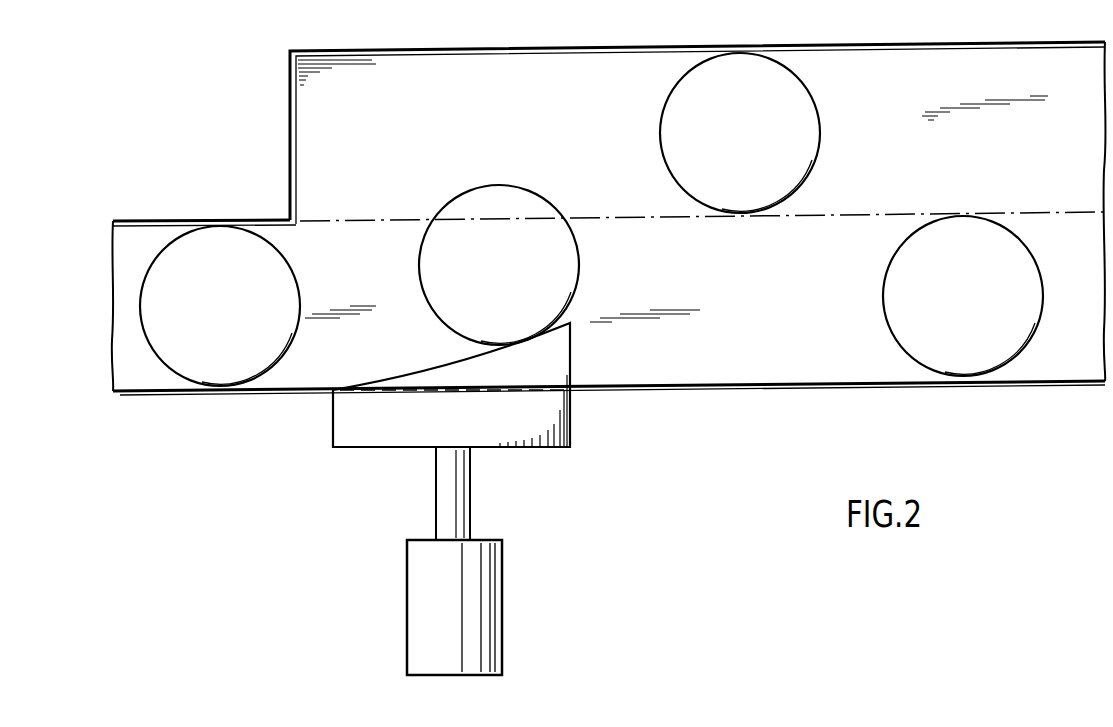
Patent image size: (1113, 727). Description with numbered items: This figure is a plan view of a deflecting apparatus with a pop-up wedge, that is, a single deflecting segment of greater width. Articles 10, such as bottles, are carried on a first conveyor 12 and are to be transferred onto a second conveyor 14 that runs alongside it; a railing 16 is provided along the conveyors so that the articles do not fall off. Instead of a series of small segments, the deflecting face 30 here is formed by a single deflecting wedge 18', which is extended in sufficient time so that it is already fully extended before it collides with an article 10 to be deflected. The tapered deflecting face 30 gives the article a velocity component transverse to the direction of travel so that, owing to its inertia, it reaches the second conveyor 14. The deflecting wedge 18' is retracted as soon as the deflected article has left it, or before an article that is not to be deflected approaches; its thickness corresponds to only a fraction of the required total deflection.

The articles 10 is at (753, 146).
The first conveyor 12 is at (135, 299).
The second conveyor 14 is at (397, 129).
The railing 16 is at (1059, 384).
The deflecting wedge 18' is at (550, 439).
The deflecting face 30 is at (410, 376).